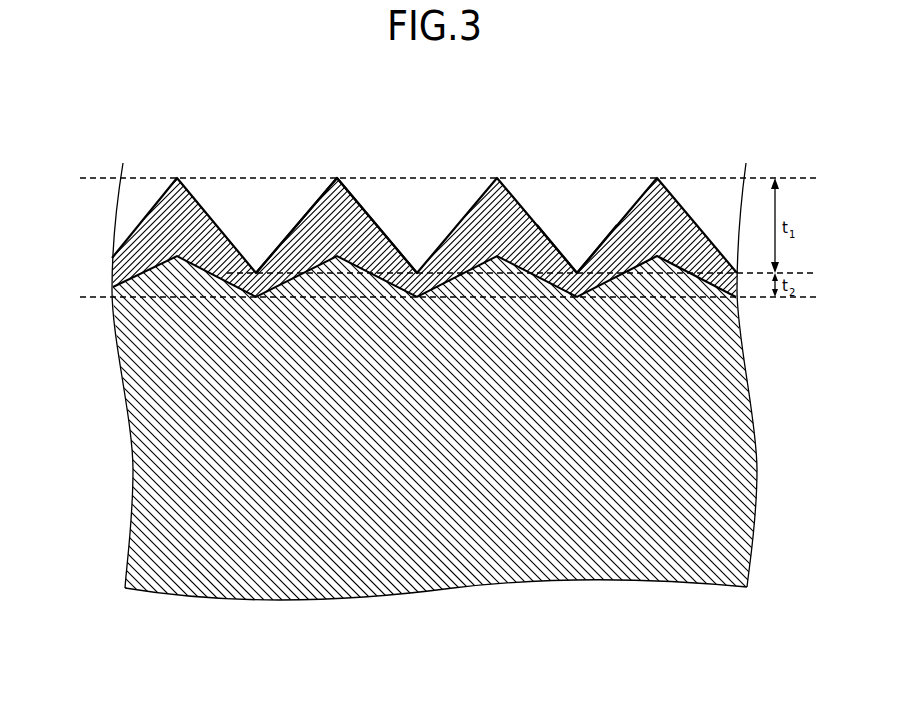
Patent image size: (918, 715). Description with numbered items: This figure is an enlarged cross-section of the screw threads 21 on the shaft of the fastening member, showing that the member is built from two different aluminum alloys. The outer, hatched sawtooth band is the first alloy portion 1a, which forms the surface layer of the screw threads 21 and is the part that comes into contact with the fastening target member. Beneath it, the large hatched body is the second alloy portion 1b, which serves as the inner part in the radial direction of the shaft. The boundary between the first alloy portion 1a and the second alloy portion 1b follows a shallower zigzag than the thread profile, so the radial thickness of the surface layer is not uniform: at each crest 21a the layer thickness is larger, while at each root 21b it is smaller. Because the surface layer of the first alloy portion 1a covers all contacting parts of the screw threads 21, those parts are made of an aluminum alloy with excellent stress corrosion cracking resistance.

The first alloy portion 1a is at (168, 235).
The second alloy portion 1b is at (170, 450).
The screw threads 21 is at (513, 177).
The crest 21a is at (333, 178).
The root 21b is at (578, 270).